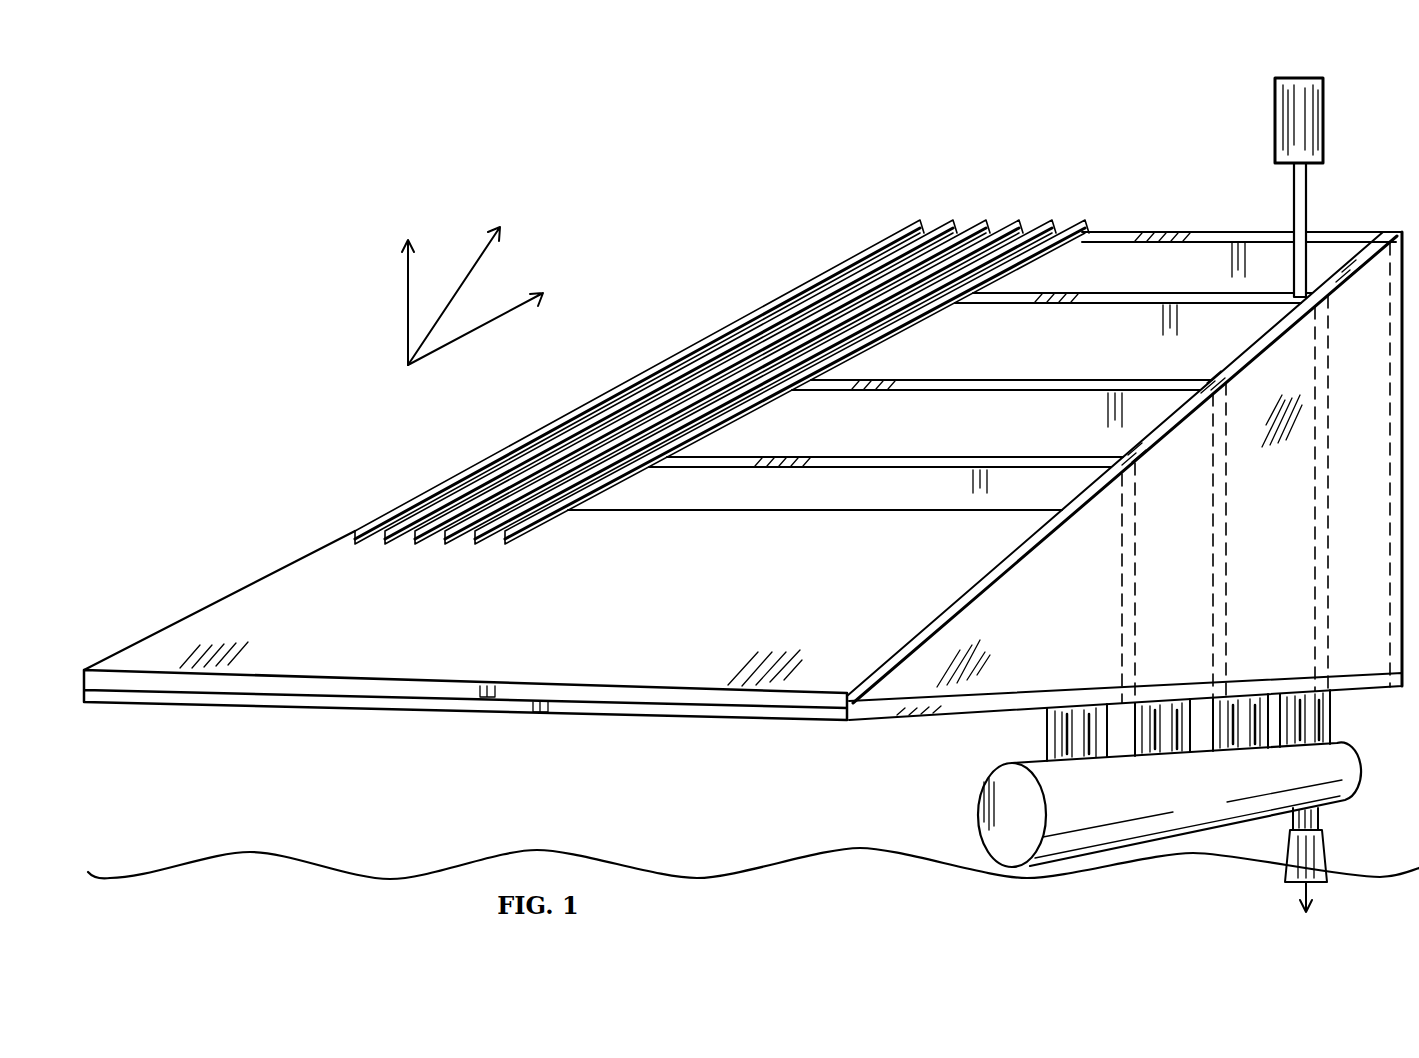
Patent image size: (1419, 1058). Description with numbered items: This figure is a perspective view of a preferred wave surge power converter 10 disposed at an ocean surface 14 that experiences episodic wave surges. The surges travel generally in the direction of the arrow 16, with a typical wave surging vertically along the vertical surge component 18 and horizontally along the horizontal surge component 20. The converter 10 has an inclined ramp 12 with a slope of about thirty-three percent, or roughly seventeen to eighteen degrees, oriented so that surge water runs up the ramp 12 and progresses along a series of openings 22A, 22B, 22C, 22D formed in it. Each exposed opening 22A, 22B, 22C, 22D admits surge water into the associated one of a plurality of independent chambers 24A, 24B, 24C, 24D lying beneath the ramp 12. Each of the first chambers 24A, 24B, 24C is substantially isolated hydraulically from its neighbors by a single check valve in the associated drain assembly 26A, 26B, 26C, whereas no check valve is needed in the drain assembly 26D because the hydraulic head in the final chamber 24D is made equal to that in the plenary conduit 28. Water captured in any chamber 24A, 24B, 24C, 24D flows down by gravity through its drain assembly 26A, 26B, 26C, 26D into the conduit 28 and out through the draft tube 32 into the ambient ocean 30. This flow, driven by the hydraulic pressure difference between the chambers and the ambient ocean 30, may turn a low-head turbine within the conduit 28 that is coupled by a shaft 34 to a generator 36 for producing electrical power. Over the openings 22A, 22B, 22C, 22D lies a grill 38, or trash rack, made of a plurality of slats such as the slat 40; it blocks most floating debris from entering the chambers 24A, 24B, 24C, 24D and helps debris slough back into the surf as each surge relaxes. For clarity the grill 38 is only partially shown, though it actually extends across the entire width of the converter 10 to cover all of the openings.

The wave surge power converter 10 is at (290, 399).
The inclined ramp 12 is at (305, 568).
The ocean surface 14 is at (705, 878).
The surge direction arrow 16 is at (487, 253).
The vertical surge component 18 is at (407, 307).
The horizontal surge component 20 is at (503, 317).
The opening 22A is at (810, 505).
The opening 22B is at (896, 433).
The opening 22C is at (993, 348).
The opening 22D is at (1108, 283).
The independent chamber 24A is at (1058, 615).
The independent chamber 24B is at (1175, 575).
The independent chamber 24C is at (1267, 540).
The independent chamber 24D is at (1355, 560).
The drain assembly 26A is at (1061, 712).
The drain assembly 26B is at (1148, 712).
The drain assembly 26C is at (1233, 712).
The drain assembly 26D is at (1307, 705).
The plenary conduit 28 is at (986, 837).
The ambient ocean 30 is at (1156, 906).
The draft tube 32 is at (1308, 893).
The shaft 34 is at (1293, 217).
The generator 36 is at (1280, 152).
The grill 38 is at (722, 378).
The slat 40 is at (860, 257).